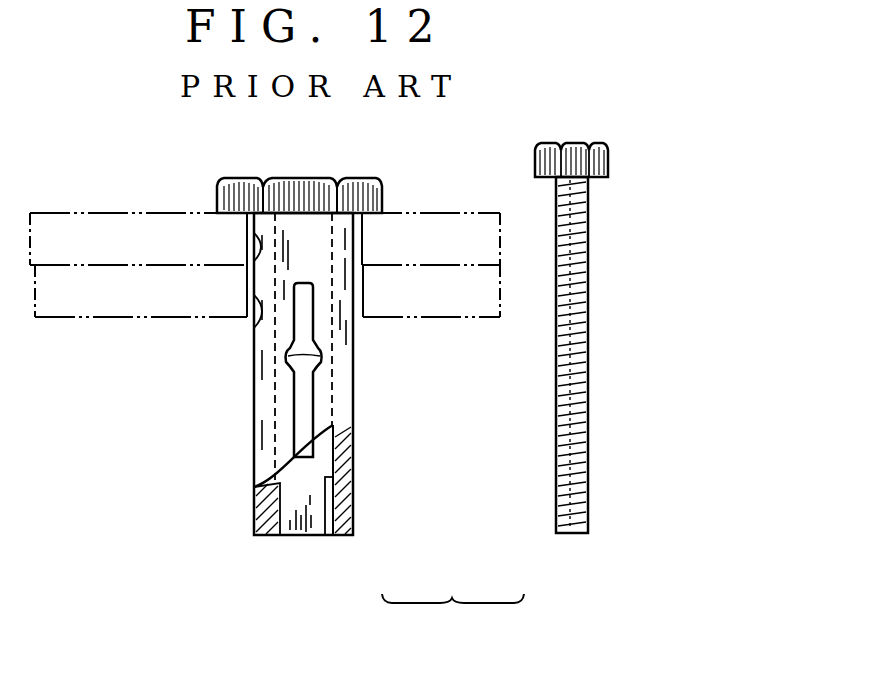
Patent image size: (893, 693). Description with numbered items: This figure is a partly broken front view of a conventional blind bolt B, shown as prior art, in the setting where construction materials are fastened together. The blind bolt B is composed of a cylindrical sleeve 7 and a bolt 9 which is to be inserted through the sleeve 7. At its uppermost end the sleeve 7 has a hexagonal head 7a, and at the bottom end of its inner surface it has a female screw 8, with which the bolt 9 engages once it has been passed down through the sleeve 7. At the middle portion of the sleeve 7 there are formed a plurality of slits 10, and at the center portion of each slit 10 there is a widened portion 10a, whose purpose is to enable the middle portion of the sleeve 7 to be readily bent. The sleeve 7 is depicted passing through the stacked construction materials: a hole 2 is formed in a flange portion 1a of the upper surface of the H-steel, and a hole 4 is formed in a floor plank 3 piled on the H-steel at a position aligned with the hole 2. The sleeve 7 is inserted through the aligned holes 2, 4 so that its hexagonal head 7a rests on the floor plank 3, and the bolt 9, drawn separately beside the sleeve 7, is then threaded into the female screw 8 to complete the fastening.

The flange portion 1a is at (82, 316).
The hole 2 is at (262, 298).
The floor plank 3 is at (136, 224).
The hole 4 is at (262, 265).
The cylindrical sleeve 7 is at (343, 403).
The hexagonal head 7a is at (383, 193).
The female screw 8 is at (273, 537).
The bolt 9 is at (557, 460).
The slits 10 is at (303, 326).
The widened portion 10a is at (300, 358).
The blind bolt B is at (453, 623).